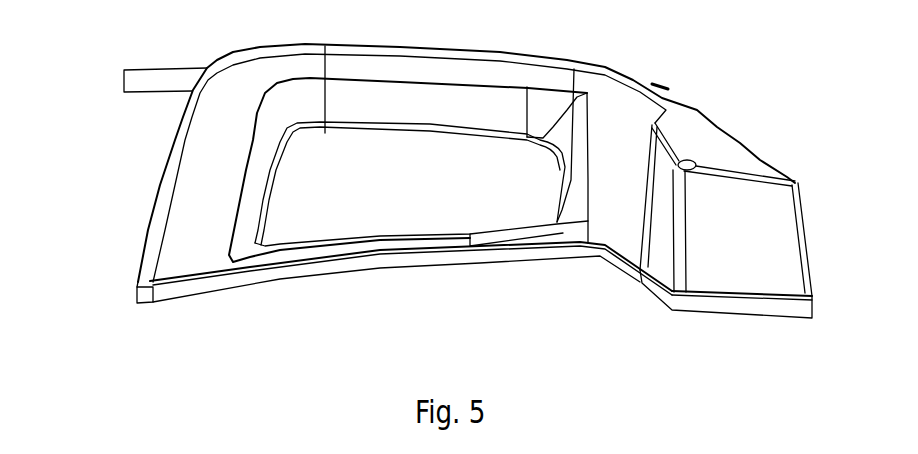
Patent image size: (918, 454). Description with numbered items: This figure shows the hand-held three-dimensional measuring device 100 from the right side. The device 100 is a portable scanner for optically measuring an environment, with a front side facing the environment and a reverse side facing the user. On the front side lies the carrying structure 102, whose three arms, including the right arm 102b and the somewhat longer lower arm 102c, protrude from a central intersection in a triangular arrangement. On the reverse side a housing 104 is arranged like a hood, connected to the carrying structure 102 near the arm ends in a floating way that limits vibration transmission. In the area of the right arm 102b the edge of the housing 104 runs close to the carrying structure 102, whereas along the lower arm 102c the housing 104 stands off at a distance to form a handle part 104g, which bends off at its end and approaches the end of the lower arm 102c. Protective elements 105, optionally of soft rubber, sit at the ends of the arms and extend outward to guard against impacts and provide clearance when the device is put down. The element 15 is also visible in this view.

The vehicle body attachment tab 15 is at (158, 78).
The 3D measuring device 100 is at (262, 297).
The carrying structure 102 is at (589, 268).
The right arm 102b is at (660, 292).
The lower arm 102c is at (187, 292).
The housing 104 is at (698, 122).
The handle part 104g is at (415, 92).
The protective elements 105 is at (138, 298).